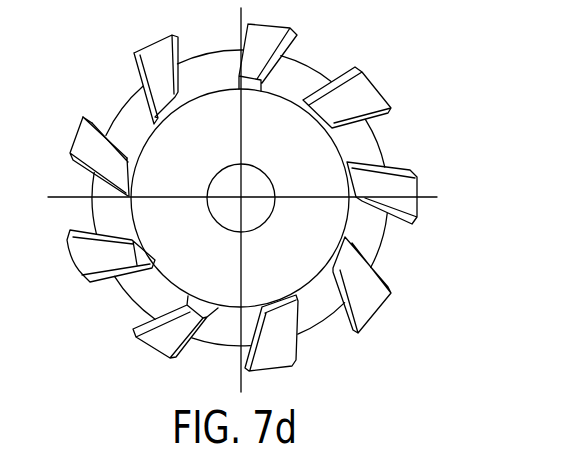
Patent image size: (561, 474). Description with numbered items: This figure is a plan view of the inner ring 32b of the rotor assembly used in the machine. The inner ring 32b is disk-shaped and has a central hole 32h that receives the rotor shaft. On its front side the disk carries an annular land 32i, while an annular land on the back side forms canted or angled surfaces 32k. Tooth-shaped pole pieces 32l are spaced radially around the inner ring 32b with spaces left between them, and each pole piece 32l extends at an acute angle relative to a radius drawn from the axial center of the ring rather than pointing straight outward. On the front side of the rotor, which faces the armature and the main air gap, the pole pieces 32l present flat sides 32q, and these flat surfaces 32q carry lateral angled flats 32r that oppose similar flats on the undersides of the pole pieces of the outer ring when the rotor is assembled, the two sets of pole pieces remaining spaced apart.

The inner ring 32b is at (381, 62).
The central hole 32h is at (258, 208).
The annular land 32i is at (197, 169).
The canted or angled surfaces 32k is at (203, 64).
The pole pieces 32l is at (158, 54).
The flat sides 32q is at (83, 145).
The lateral angled flats 32r is at (94, 116).